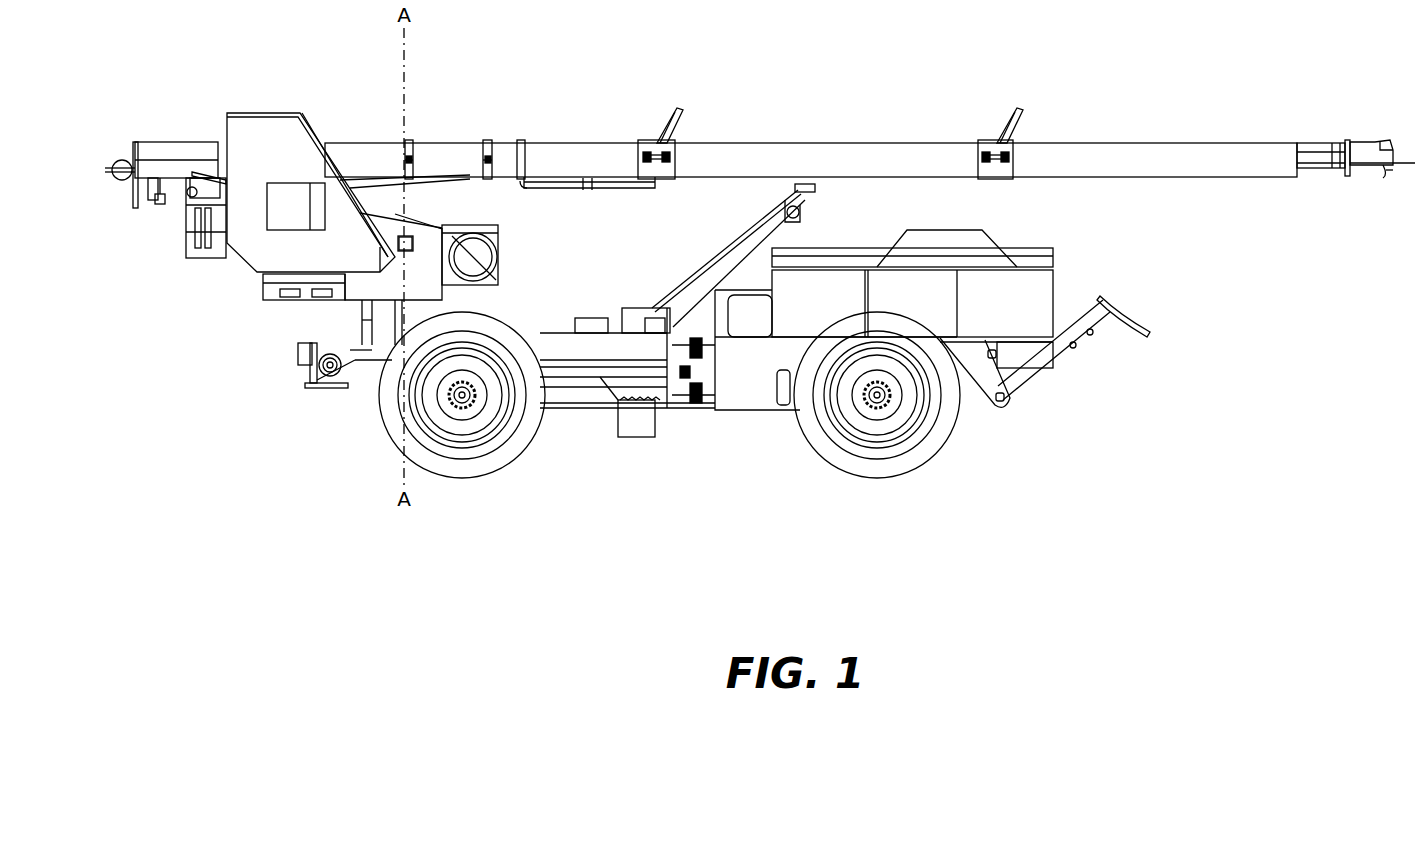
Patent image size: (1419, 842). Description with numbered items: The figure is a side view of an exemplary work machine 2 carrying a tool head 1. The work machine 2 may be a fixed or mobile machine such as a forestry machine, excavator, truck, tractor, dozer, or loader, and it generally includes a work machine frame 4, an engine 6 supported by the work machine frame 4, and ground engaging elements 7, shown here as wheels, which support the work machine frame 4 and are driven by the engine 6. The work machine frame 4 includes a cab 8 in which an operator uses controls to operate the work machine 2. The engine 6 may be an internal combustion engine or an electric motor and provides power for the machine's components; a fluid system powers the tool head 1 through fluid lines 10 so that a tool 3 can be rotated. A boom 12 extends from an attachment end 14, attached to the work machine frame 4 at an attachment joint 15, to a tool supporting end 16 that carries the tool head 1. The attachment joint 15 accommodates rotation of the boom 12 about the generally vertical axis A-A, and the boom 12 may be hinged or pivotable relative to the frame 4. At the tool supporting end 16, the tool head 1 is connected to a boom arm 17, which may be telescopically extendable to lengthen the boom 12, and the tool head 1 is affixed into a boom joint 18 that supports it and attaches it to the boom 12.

The tool head 1 is at (1358, 116).
The work machine 2 is at (1118, 250).
The tool 3 is at (1395, 172).
The work machine frame 4 is at (730, 410).
The engine 6 is at (1035, 320).
The ground engaging elements 7 is at (908, 460).
The cab 8 is at (955, 345).
The fluid lines 10 is at (990, 150).
The boom 12 is at (816, 118).
The attachment end 14 is at (167, 172).
The attachment joint 15 is at (400, 212).
The tool supporting end 16 is at (1282, 203).
The boom arm 17 is at (1322, 150).
The boom joint 18 is at (1347, 142).